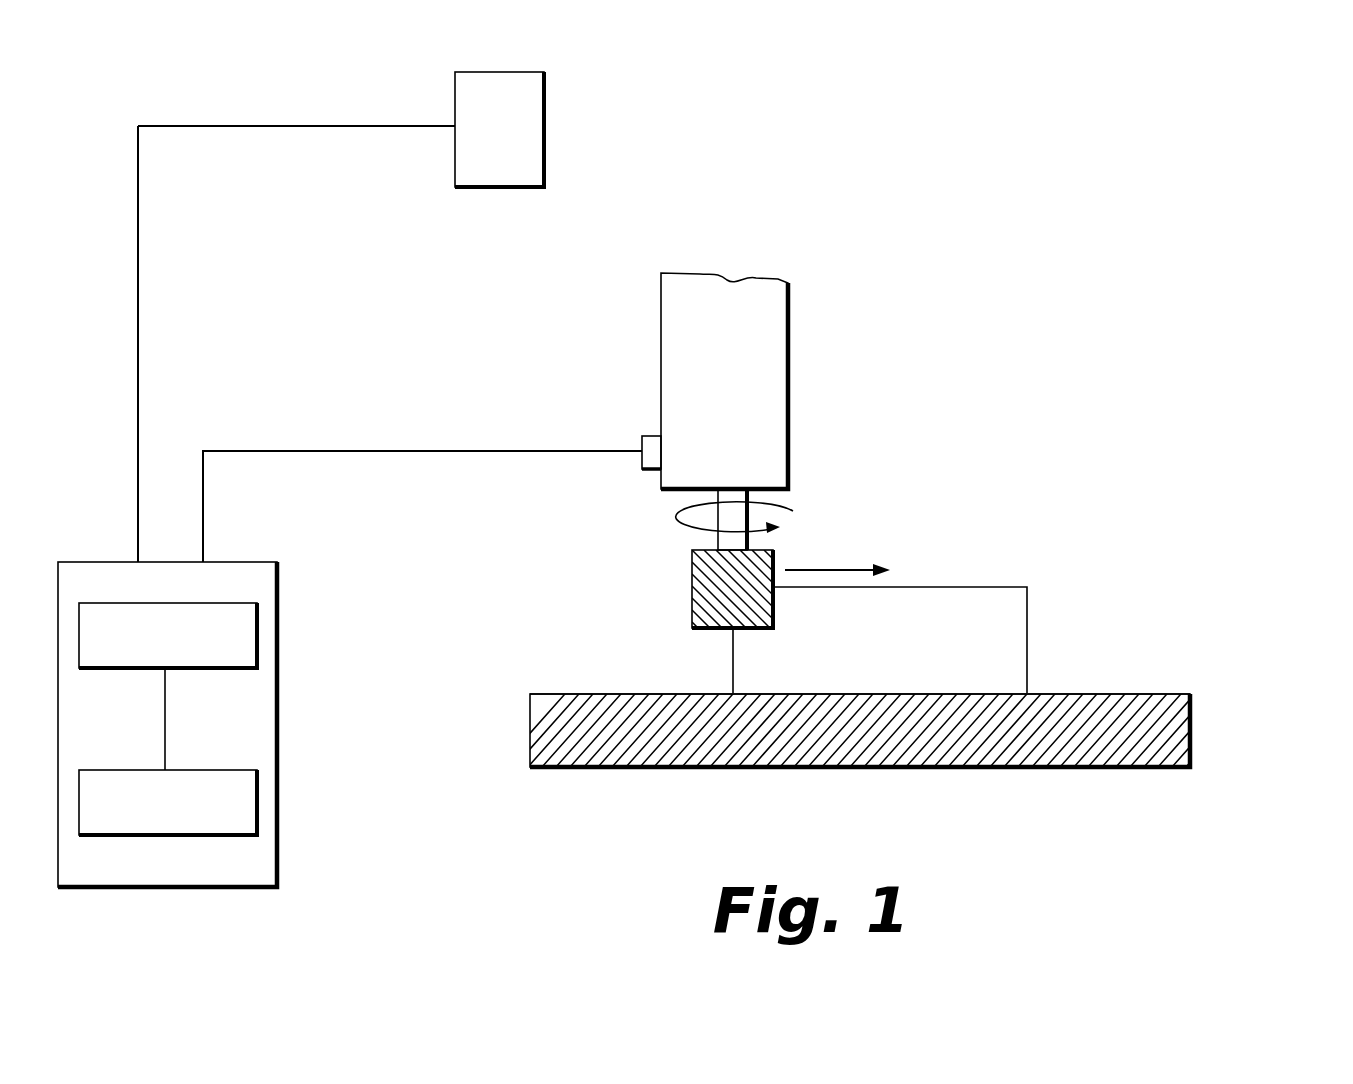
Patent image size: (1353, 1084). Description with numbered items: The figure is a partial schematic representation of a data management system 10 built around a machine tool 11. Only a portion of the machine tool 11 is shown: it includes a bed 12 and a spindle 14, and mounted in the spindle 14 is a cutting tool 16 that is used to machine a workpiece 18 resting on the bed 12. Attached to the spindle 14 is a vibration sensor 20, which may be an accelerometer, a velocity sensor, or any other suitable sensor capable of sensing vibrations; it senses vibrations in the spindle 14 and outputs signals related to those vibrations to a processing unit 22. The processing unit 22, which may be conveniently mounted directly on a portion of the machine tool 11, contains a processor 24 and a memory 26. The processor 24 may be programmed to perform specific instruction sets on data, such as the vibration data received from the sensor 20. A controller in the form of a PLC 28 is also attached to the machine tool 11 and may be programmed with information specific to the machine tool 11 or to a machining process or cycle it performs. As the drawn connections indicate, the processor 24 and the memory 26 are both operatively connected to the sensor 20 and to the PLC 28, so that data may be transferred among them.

The data management system 10 is at (1152, 372).
The machine tool 11 is at (1159, 682).
The bed 12 is at (1193, 722).
The spindle 14 is at (792, 337).
The cutting tool 16 is at (692, 587).
The workpiece 18 is at (1028, 608).
The vibration sensor 20 is at (651, 434).
The processing unit 22 is at (238, 724).
The processor 24 is at (258, 627).
The memory 26 is at (258, 794).
The PLC 28 is at (546, 125).